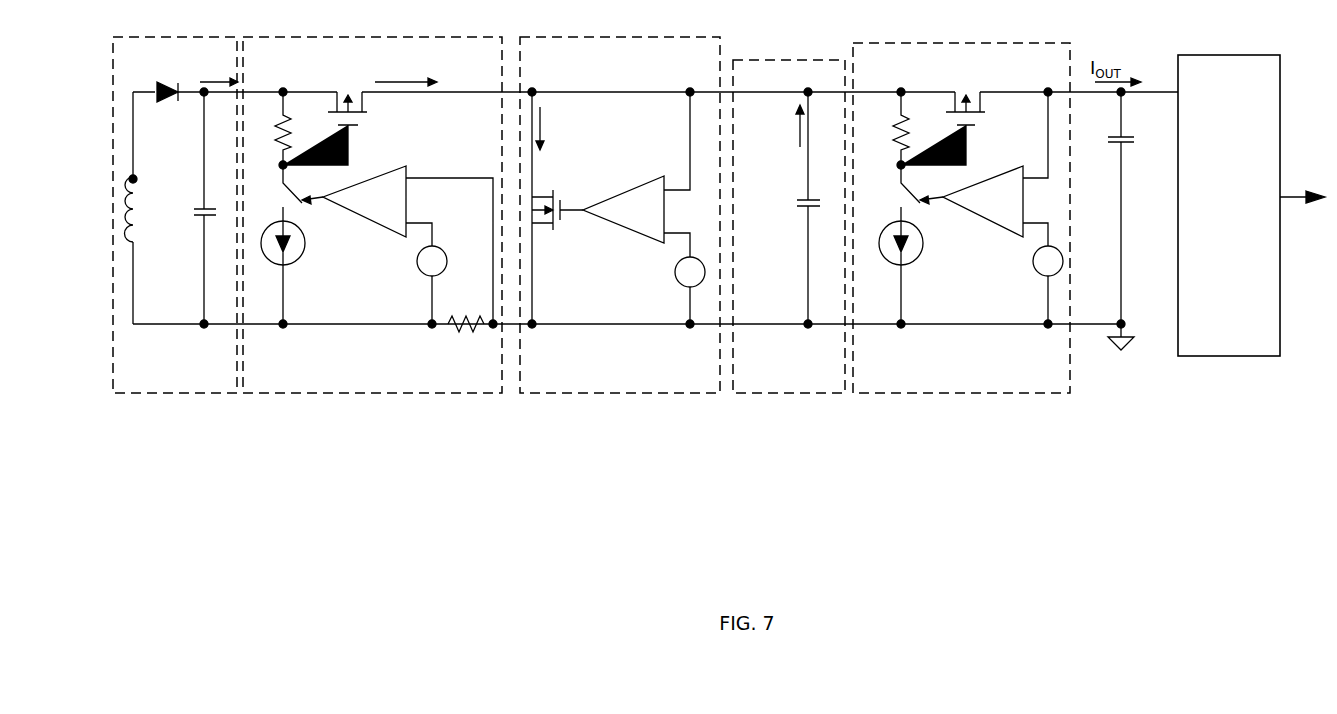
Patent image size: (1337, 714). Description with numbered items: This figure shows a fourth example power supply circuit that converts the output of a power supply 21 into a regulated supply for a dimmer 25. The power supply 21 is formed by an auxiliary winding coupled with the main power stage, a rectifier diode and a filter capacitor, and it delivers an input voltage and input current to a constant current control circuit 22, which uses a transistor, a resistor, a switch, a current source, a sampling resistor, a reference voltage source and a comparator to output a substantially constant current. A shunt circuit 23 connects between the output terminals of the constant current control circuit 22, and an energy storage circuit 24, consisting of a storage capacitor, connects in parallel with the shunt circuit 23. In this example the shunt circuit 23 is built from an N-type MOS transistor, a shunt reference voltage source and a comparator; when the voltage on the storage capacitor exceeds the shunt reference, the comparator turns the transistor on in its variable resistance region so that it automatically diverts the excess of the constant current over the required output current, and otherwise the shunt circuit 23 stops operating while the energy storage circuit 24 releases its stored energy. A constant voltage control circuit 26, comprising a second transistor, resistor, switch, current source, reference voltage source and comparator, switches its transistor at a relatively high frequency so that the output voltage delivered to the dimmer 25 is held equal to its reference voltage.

The power supply 21 is at (152, 393).
The constant current control circuit 22 is at (355, 393).
The shunt circuit 23 is at (610, 393).
The energy storage circuit 24 is at (777, 393).
The dimmer 25 is at (1202, 356).
The constant voltage control circuit 26 is at (938, 393).